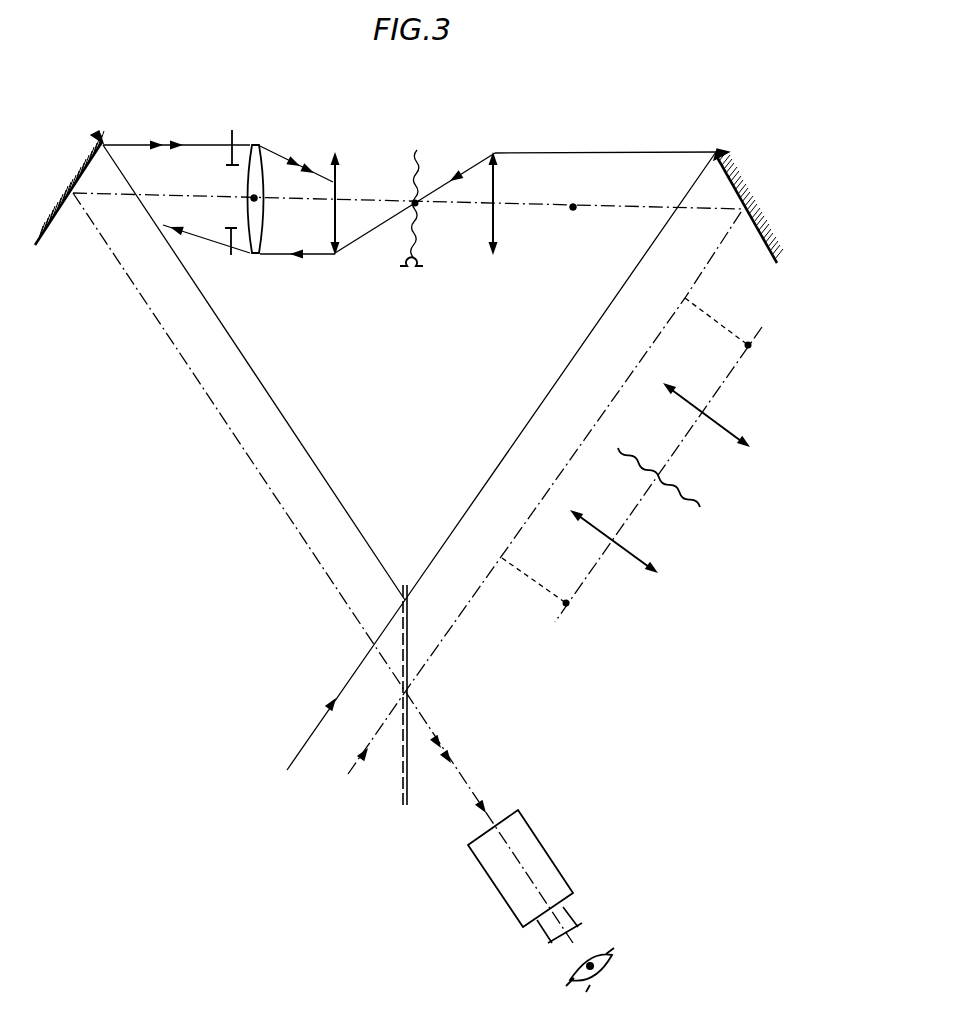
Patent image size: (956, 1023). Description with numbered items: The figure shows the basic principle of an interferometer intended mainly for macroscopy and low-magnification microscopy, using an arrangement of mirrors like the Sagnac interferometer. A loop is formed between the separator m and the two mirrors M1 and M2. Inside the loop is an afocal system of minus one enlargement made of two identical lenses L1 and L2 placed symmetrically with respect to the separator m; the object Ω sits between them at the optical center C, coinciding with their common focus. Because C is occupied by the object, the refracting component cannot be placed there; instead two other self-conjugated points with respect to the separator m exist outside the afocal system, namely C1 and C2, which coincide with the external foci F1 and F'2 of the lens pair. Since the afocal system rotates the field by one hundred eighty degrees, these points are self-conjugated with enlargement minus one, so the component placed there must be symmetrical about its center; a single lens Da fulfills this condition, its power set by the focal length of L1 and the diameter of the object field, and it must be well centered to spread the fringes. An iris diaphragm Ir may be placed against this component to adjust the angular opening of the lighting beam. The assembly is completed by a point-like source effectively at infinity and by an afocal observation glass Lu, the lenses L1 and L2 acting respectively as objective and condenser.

The mirror M2 is at (69, 188).
The mirror M1 is at (748, 206).
The lens Da is at (249, 139).
The iris diaphragm Ir is at (230, 250).
The lens L2 is at (340, 186).
The lens L1 is at (496, 187).
The optical center C is at (403, 190).
The self-conjugated point C2 is at (256, 197).
The external focus of the afocal system F'2 is at (273, 217).
The self-conjugated point C1 is at (581, 192).
The external focus of the afocal system F1 is at (573, 227).
The separator m is at (399, 711).
The afocal observation glass Lu is at (526, 876).